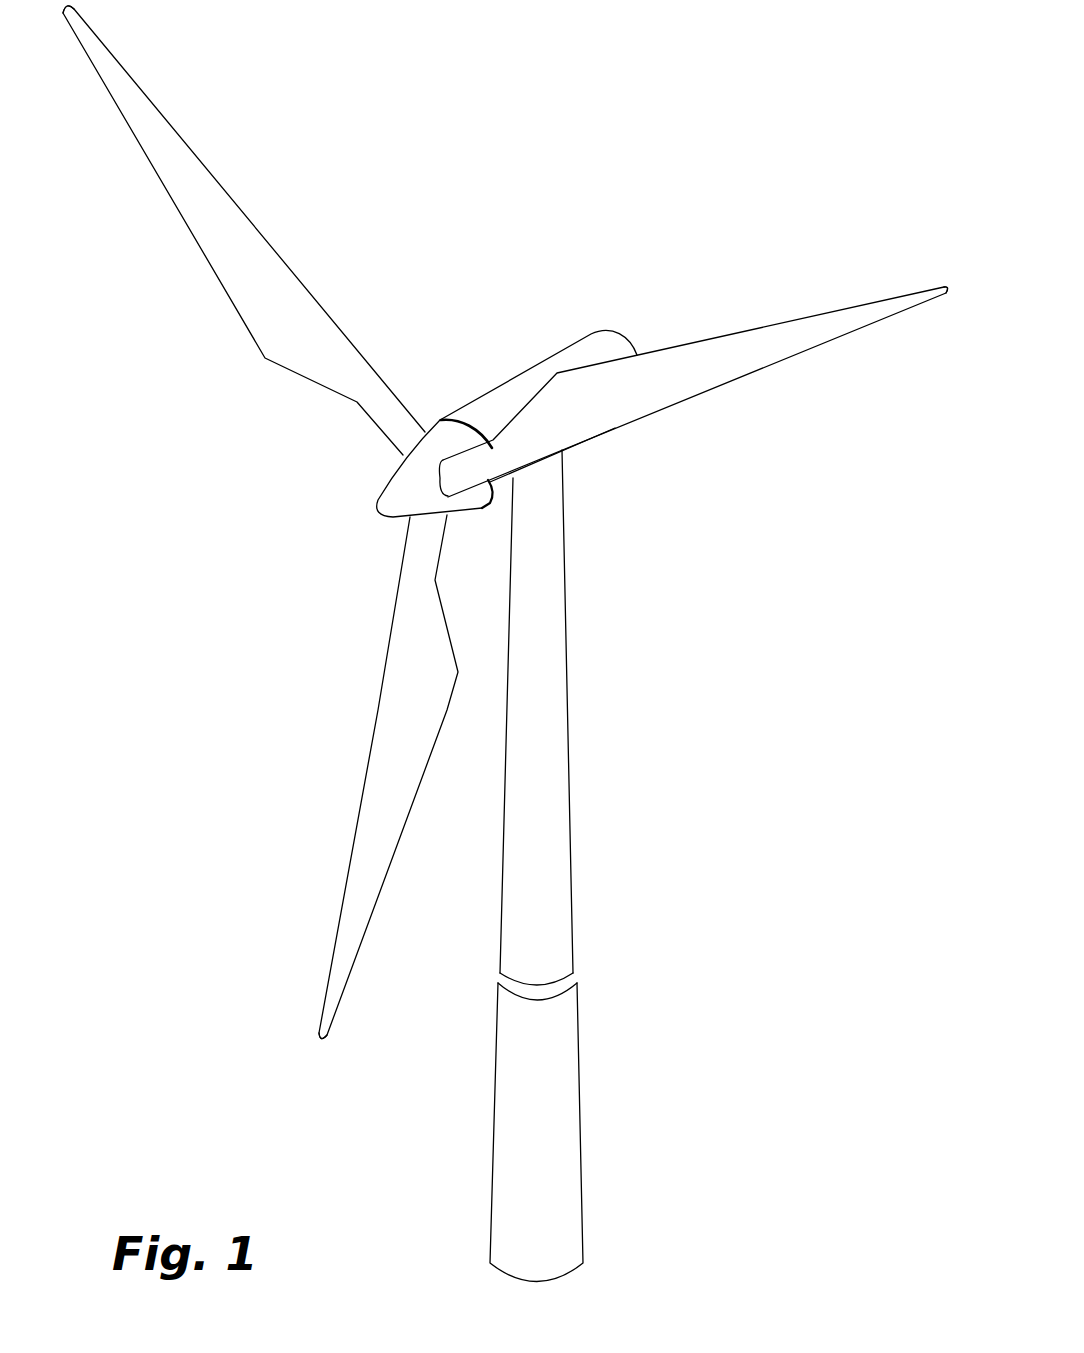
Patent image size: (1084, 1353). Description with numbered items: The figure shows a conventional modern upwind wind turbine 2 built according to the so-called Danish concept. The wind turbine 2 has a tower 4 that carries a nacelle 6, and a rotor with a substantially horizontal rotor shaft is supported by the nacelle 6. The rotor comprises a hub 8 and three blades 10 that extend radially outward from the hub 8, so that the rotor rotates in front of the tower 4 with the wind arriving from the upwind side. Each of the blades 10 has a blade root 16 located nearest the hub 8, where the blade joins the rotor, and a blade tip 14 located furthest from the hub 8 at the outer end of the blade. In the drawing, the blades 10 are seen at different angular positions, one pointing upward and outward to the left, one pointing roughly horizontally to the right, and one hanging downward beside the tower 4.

The wind turbine 2 is at (683, 803).
The tower 4 is at (555, 720).
The nacelle 6 is at (497, 398).
The hub 8 is at (397, 490).
The blade 10 is at (505, 522).
The blade tip 14 is at (110, 70).
The blade root 16 is at (407, 442).